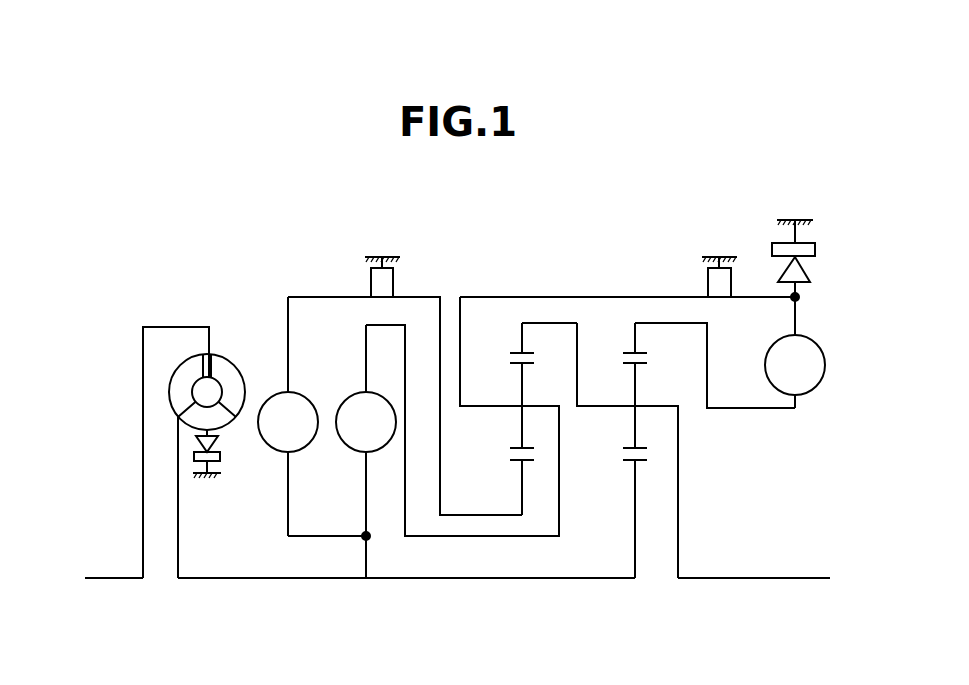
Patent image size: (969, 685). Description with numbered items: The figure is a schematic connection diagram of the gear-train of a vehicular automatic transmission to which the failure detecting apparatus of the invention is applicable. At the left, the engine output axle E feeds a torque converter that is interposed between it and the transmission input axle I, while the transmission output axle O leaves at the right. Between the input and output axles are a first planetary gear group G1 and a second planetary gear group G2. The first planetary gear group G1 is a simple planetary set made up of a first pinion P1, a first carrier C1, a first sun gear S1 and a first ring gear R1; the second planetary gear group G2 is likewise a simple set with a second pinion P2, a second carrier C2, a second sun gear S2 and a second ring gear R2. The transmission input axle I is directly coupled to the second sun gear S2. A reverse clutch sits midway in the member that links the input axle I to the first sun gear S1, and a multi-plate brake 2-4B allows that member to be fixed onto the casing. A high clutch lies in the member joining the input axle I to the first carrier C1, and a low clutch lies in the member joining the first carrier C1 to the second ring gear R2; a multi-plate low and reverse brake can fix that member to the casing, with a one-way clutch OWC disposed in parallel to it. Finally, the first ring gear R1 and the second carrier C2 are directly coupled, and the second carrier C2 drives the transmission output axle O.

The engine output axle E is at (131, 578).
The transmission input axle I is at (270, 578).
The transmission output axle O is at (765, 578).
The 2-4 brake 2-4B is at (371, 272).
The first planetary gear group G1 is at (506, 316).
The second planetary gear group G2 is at (626, 316).
The first ring gear R1 is at (521, 330).
The first carrier C1 is at (490, 406).
The first pinion P1 is at (520, 428).
The first sun gear S1 is at (520, 485).
The second ring gear R2 is at (634, 330).
The second carrier C2 is at (601, 406).
The second pinion P2 is at (633, 428).
The second sun gear S2 is at (633, 498).
The one-way clutch OWC is at (781, 272).